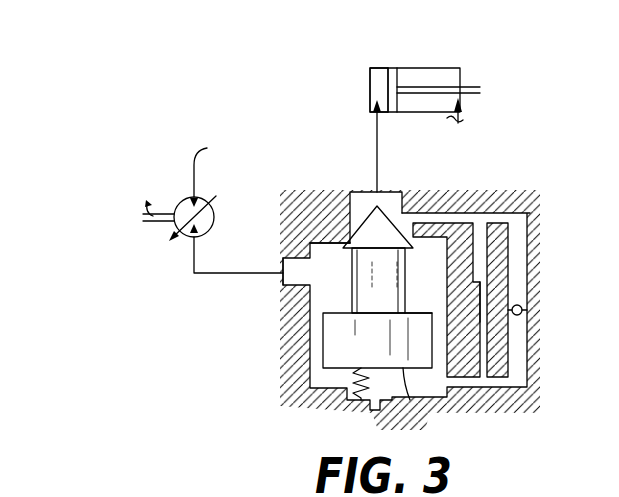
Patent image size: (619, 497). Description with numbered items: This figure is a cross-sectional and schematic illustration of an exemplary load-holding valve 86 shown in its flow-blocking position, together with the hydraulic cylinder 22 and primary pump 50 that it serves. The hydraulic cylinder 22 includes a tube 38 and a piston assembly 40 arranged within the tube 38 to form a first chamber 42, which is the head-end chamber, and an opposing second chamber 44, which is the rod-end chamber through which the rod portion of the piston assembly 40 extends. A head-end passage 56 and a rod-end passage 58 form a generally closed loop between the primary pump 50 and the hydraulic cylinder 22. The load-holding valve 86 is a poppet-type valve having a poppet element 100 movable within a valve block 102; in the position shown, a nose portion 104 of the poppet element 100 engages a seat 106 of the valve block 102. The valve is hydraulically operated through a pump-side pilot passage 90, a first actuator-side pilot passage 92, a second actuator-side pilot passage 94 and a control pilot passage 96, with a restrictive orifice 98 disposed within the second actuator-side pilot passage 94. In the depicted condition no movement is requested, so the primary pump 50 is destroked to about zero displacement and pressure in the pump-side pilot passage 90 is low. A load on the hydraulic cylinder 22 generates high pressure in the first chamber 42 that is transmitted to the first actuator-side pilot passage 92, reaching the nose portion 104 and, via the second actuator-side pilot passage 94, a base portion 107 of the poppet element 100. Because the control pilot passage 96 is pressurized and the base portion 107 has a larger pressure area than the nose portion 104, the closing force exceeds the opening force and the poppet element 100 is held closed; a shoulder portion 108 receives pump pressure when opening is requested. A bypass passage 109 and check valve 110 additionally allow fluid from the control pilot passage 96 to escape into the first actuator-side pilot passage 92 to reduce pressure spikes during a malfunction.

The hydraulic cylinder 22 is at (432, 50).
The tube 38 is at (447, 68).
The piston assembly 40 is at (392, 87).
The first chamber 42 is at (382, 82).
The second chamber 44 is at (457, 78).
The primary pump 50 is at (175, 203).
The head-end passage 56 is at (381, 143).
The rod-end passage 58 is at (207, 148).
The load-holding valve 86 is at (527, 400).
The pump-side pilot passage 90 is at (307, 275).
The first actuator-side pilot passage 92 is at (395, 203).
The second actuator-side pilot passage 94 is at (480, 263).
The control pilot passage 96 is at (370, 398).
The restrictive orifice 98 is at (478, 296).
The poppet element 100 is at (393, 304).
The valve block 102 is at (332, 223).
The nose portion 104 is at (360, 237).
The seat 106 is at (350, 249).
The base portion 107 is at (408, 400).
The shoulder portion 108 is at (426, 306).
The bypass passage 109 is at (518, 350).
The check valve 110 is at (522, 308).